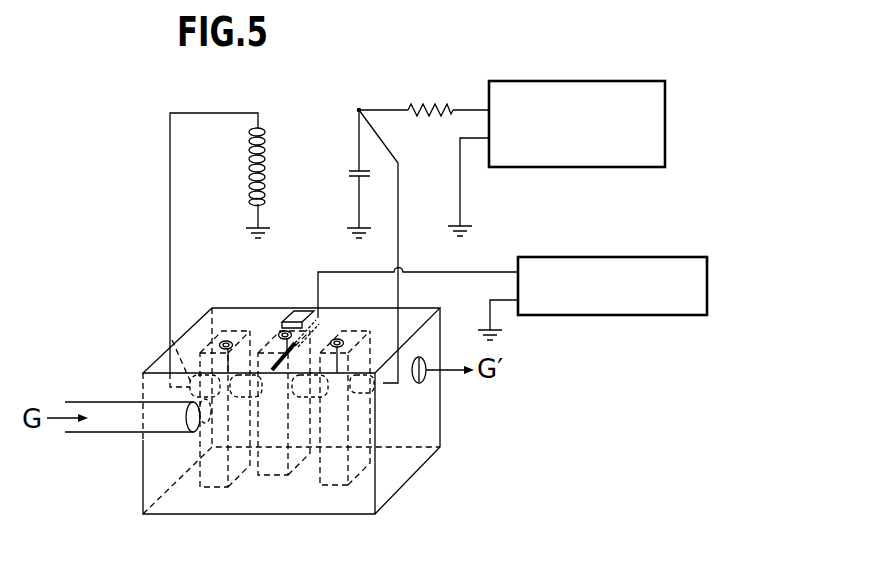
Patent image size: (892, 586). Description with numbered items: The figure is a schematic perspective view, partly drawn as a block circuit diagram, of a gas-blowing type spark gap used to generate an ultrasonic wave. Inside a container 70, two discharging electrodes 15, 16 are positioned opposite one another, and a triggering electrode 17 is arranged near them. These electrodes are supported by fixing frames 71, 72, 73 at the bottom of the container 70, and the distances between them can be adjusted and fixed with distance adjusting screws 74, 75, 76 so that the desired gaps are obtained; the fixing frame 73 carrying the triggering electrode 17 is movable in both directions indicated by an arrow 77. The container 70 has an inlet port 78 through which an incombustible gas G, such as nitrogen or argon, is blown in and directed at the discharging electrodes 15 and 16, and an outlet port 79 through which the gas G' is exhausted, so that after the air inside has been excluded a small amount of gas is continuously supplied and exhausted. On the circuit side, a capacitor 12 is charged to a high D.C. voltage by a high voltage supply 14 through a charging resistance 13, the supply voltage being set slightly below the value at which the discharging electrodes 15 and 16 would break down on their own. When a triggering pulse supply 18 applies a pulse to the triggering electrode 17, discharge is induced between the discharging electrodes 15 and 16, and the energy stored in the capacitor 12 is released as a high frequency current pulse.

The capacitor 12 is at (349, 171).
The charging resistance 13 is at (444, 104).
The high voltage supply 14 is at (530, 81).
The discharging electrode 15 is at (365, 393).
The discharging electrode 16 is at (172, 340).
The triggering electrode 17 is at (266, 352).
The triggering pulse supply 18 is at (544, 257).
The container 70 is at (143, 477).
The fixing frame 71 is at (338, 485).
The fixing frame 72 is at (215, 487).
The fixing frame 73 is at (275, 475).
The distance adjusting screw 74 is at (338, 339).
The distance adjusting screw 75 is at (226, 341).
The distance adjusting screw 76 is at (283, 333).
The arrow 77 is at (297, 311).
The inlet port 78 is at (180, 393).
The outlet port 79 is at (427, 378).